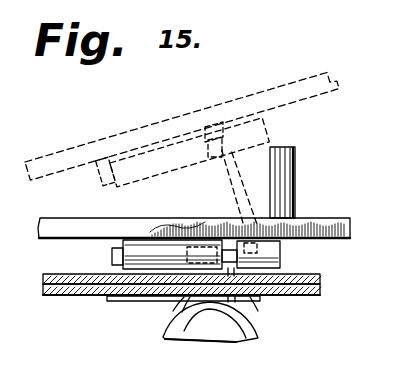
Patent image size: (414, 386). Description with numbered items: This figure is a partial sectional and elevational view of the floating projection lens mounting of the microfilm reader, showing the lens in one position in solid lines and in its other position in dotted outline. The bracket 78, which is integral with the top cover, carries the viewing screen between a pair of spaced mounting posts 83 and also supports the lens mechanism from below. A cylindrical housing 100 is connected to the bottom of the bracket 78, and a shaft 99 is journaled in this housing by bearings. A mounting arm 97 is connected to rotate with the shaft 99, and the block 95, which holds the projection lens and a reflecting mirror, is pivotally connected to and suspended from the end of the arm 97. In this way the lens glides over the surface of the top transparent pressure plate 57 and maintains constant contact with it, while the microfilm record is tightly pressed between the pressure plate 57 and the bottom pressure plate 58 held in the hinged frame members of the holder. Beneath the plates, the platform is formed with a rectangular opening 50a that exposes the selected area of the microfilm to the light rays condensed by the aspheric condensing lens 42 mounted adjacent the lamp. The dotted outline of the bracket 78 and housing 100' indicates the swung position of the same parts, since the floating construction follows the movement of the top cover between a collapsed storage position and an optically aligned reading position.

The bracket 78 is at (339, 88).
The cylindrical housing 100 is at (185, 235).
The solenoid (raised position) 100' is at (183, 162).
The shaft 99 is at (217, 122).
The mounting arm 97 is at (226, 207).
The mounting posts 83 is at (295, 191).
The pressure plate 57 is at (320, 277).
The pressure plate 58 is at (320, 294).
The block 95 is at (143, 298).
The rectangular opening 50a is at (177, 312).
The aspheric condensing lens 42 is at (178, 328).